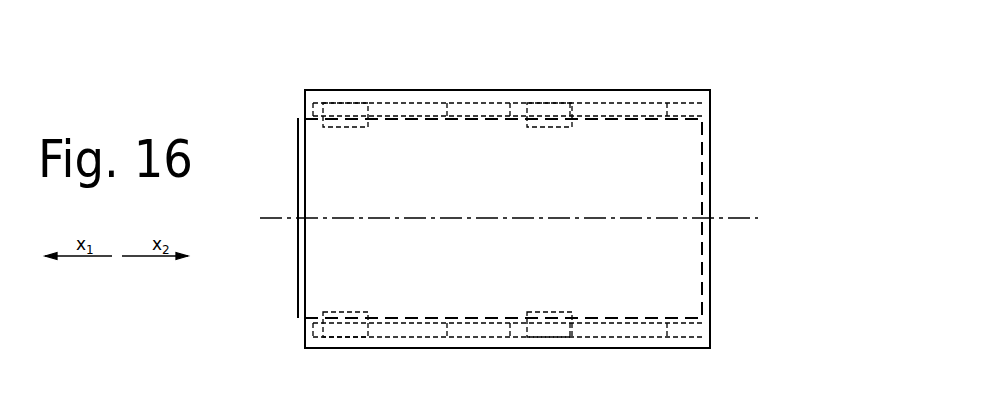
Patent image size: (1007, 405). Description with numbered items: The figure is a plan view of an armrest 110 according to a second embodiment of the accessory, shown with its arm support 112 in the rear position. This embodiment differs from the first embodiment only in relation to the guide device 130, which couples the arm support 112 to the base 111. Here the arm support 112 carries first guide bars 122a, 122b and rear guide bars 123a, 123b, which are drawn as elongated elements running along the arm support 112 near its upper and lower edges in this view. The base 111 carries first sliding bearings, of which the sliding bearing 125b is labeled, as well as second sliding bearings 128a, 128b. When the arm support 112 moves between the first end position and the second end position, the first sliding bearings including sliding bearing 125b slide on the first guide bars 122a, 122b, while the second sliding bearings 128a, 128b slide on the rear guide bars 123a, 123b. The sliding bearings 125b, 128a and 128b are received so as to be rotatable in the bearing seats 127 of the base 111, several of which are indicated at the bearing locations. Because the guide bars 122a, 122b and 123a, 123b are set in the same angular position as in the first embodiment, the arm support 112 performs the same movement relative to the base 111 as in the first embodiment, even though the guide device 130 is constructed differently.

The armrest 110 is at (575, 190).
The base 111 is at (300, 175).
The arm support 112 is at (683, 247).
The first guide bar 122a is at (430, 100).
The first guide bar 122b is at (416, 338).
The rear guide bar 123a is at (632, 103).
The rear guide bar 123b is at (634, 337).
The first sliding bearing 125b is at (350, 113).
The bearing seat 127 is at (351, 138).
The second sliding bearing 128a is at (550, 118).
The second sliding bearing 128b is at (550, 313).
The guide device 130 is at (644, 182).